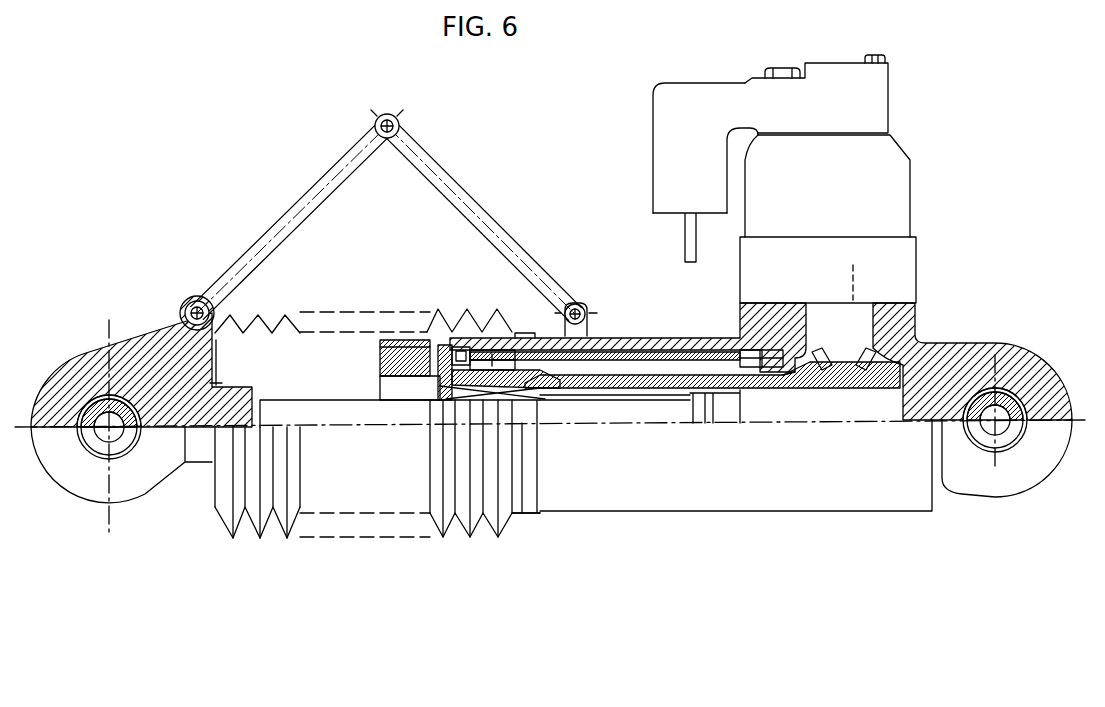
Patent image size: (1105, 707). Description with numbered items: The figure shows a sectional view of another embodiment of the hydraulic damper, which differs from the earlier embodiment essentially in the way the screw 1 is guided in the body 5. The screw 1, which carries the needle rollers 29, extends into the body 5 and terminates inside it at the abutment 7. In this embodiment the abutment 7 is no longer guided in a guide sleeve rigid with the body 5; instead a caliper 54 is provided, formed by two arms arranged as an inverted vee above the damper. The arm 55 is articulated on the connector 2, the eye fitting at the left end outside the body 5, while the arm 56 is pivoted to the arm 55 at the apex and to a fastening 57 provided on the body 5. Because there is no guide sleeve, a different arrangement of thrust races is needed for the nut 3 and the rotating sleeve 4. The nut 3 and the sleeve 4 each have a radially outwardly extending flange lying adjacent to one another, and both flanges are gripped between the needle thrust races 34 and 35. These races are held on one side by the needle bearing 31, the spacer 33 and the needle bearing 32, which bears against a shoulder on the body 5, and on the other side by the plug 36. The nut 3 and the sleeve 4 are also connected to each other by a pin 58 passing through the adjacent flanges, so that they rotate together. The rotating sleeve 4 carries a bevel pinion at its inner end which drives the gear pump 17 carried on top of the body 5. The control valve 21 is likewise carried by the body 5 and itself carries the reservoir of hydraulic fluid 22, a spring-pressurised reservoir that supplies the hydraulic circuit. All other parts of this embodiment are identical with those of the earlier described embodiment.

The screw 1 is at (313, 410).
The connector 2 is at (142, 362).
The nut 3 is at (444, 396).
The rotating sleeve 4 is at (670, 392).
The body 5 is at (647, 345).
The abutment 7 is at (727, 405).
The gear pump 17 is at (878, 196).
The control valve 21 is at (856, 117).
The reservoir of hydraulic fluid 22 is at (688, 138).
The needle rollers 29 is at (480, 396).
The needle bearing 31 is at (545, 385).
The needle bearing 32 is at (780, 372).
The spacer 33 is at (712, 360).
The needle thrust race 34 is at (432, 372).
The needle thrust race 35 is at (470, 342).
The plug 36 is at (392, 357).
The caliper 54 is at (387, 158).
The arm 55 is at (268, 228).
The arm 56 is at (478, 205).
The fastening 57 is at (590, 330).
The pin 58 is at (457, 340).